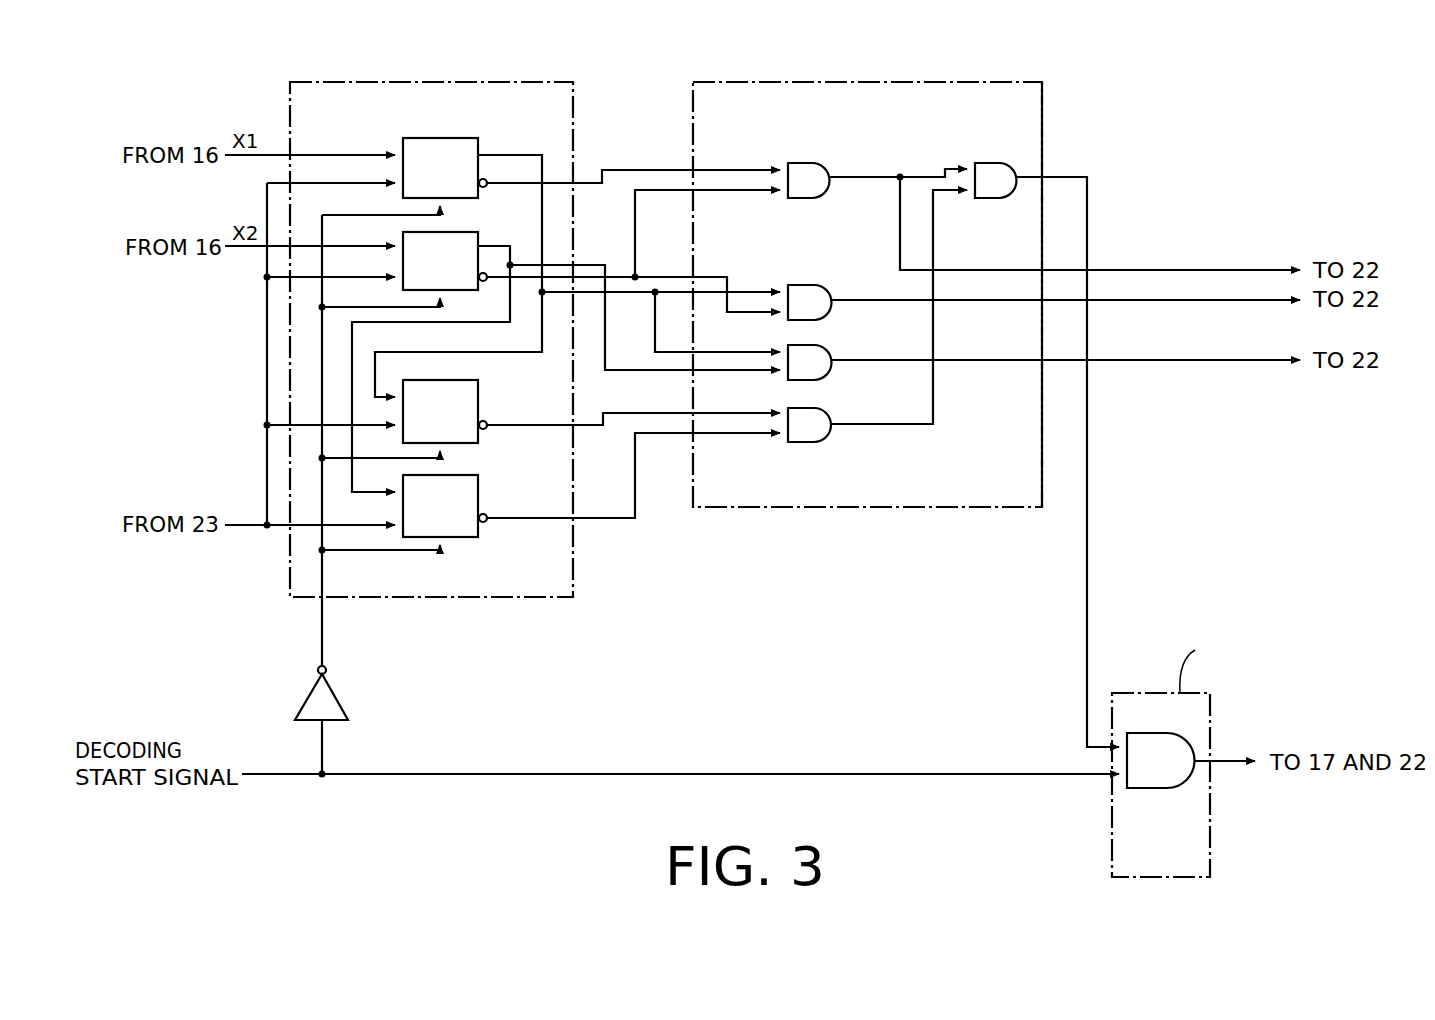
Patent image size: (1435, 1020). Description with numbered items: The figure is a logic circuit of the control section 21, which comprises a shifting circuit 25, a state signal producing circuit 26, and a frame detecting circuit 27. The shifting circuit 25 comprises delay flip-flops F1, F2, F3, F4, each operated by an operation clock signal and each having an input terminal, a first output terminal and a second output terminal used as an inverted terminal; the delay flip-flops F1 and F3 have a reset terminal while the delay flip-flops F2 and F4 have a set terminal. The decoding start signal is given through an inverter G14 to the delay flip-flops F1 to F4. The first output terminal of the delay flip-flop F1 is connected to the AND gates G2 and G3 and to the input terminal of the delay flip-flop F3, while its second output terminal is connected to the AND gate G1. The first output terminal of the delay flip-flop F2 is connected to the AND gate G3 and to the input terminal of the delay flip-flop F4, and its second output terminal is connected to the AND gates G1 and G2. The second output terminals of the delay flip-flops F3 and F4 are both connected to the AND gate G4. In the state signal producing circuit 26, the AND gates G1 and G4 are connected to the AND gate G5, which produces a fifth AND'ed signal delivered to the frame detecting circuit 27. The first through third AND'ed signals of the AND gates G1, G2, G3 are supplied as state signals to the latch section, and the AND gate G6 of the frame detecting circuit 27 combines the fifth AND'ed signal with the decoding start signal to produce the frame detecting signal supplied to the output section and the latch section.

The control section 21 is at (737, 72).
The shifting circuit 25 is at (549, 82).
The state signal producing circuit 26 is at (1000, 82).
The frame detecting circuit 27 is at (1123, 693).
The delay flip-flop F1 is at (480, 137).
The delay flip-flop F2 is at (463, 230).
The delay flip-flop F3 is at (478, 380).
The delay flip-flop F4 is at (478, 473).
The AND gate G1 is at (810, 198).
The AND gate G2 is at (822, 320).
The AND gate G3 is at (822, 380).
The AND gate G4 is at (822, 442).
The AND gate G5 is at (995, 198).
The AND gate G6 is at (1157, 788).
The inverter G14 is at (342, 698).